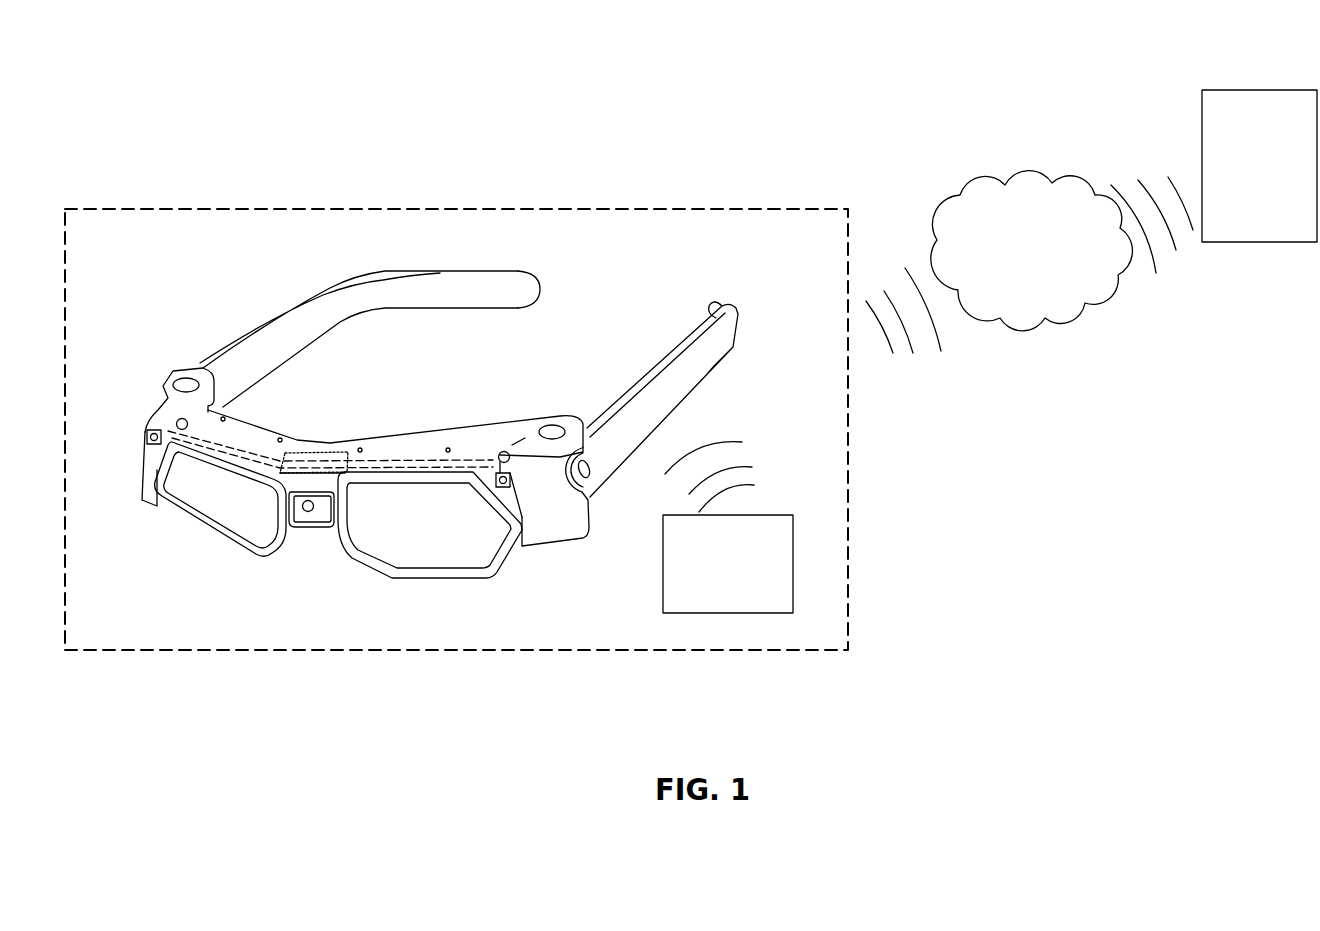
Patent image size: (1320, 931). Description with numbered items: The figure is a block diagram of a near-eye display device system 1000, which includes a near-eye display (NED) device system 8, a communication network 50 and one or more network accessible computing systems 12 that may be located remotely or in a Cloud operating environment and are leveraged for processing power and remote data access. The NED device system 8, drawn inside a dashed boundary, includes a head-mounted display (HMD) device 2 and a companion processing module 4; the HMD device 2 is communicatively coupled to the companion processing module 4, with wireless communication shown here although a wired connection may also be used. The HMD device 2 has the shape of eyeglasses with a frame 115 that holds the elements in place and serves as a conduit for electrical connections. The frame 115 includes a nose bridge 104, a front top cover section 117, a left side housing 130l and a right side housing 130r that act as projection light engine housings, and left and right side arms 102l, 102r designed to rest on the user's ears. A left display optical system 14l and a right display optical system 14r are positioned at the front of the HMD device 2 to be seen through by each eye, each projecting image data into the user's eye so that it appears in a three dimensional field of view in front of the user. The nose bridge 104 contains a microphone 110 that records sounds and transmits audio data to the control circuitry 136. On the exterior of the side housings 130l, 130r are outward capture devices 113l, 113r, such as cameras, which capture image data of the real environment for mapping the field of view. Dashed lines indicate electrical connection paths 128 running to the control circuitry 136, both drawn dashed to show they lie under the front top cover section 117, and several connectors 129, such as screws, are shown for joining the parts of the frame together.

The NED device system 1000 is at (1090, 70).
The head-mounted display (HMD) device 2 is at (648, 288).
The near-eye display (NED) device system 8 is at (850, 600).
The companion processing module 4 is at (728, 564).
The communication(s) network 50 is at (1032, 251).
The network accessible computing system(s) 12 is at (1259, 166).
The right side arm 102r is at (396, 319).
The left side arm 102l is at (647, 373).
The frame 115 is at (505, 280).
The front top cover section 117 is at (413, 443).
The connectors 129 is at (188, 372).
The electrical connection paths 128 is at (247, 450).
The control circuitry 136 is at (325, 480).
The right outward capture device 113r is at (153, 432).
The left outward capture device 113l is at (510, 490).
The right side housing 130r is at (148, 484).
The left side housing 130l is at (582, 520).
The right display optical system 14r is at (220, 508).
The left display optical system 14l is at (410, 543).
The nose bridge 104 is at (325, 480).
The microphone 110 is at (308, 515).